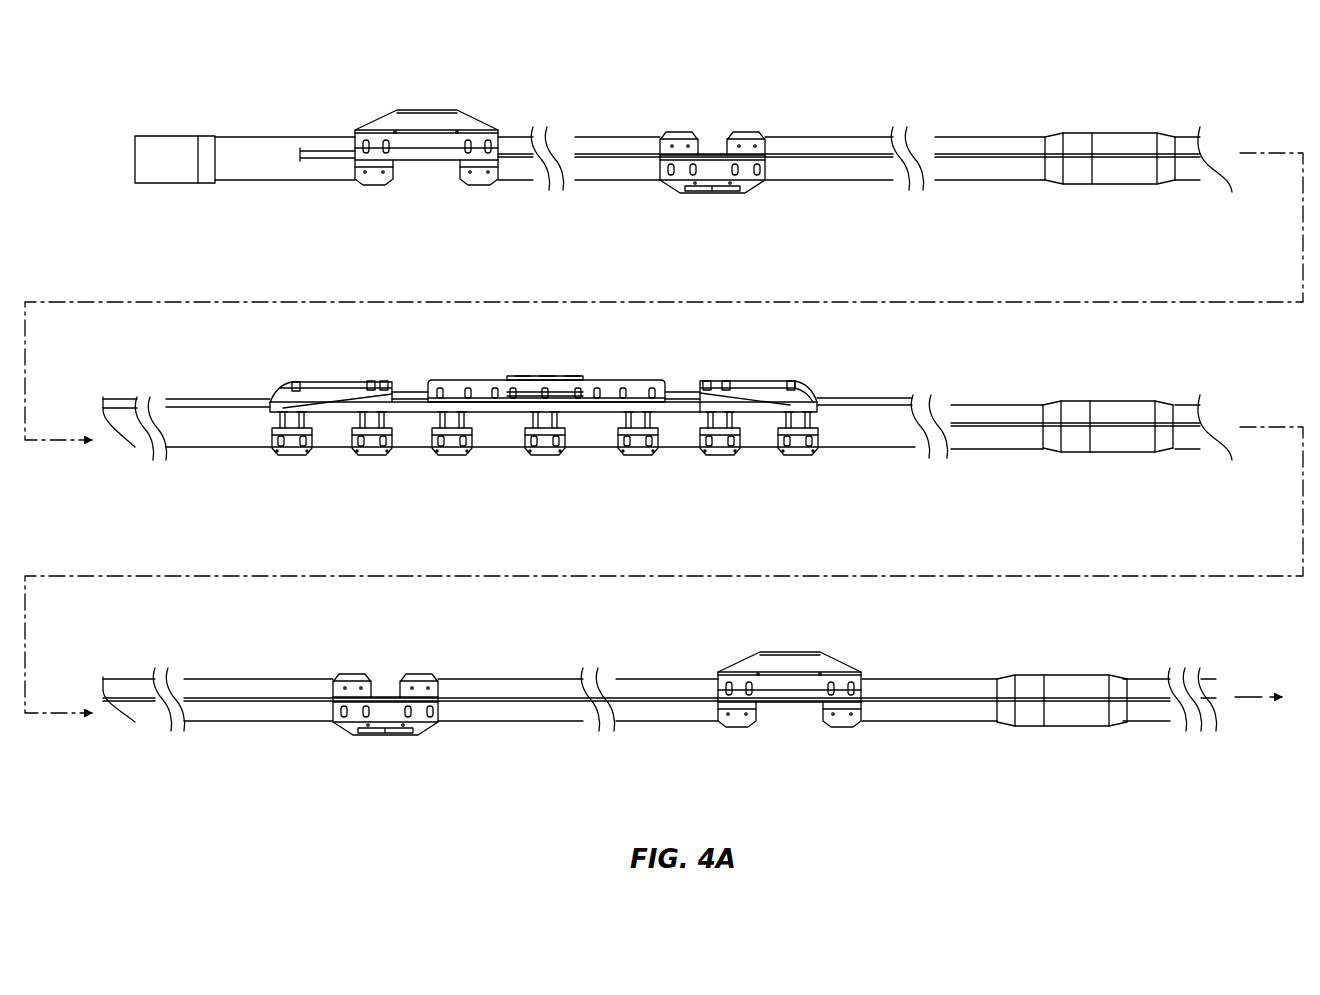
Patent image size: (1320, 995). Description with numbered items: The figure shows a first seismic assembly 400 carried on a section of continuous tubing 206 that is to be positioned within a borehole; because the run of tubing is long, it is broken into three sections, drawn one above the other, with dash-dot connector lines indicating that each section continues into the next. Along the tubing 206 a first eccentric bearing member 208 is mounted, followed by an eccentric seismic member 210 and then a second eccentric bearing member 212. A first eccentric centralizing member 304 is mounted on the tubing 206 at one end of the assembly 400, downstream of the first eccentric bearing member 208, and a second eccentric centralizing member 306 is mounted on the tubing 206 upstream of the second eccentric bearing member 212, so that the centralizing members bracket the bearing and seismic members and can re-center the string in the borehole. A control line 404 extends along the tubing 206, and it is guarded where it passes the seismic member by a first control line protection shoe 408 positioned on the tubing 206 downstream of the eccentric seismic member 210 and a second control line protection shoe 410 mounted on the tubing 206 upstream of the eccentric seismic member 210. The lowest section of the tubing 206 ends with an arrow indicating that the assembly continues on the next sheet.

The first seismic assembly 400 is at (971, 96).
The tubing 206 is at (244, 137).
The first eccentric centralizing member 304 is at (437, 105).
The first eccentric bearing member 208 is at (709, 197).
The control line 404 is at (842, 158).
The first control line protection shoe 408 is at (278, 385).
The eccentric seismic member 210 is at (590, 377).
The second control line protection shoe 410 is at (798, 377).
The second eccentric bearing member 212 is at (394, 739).
The second eccentric centralizing member 306 is at (821, 651).